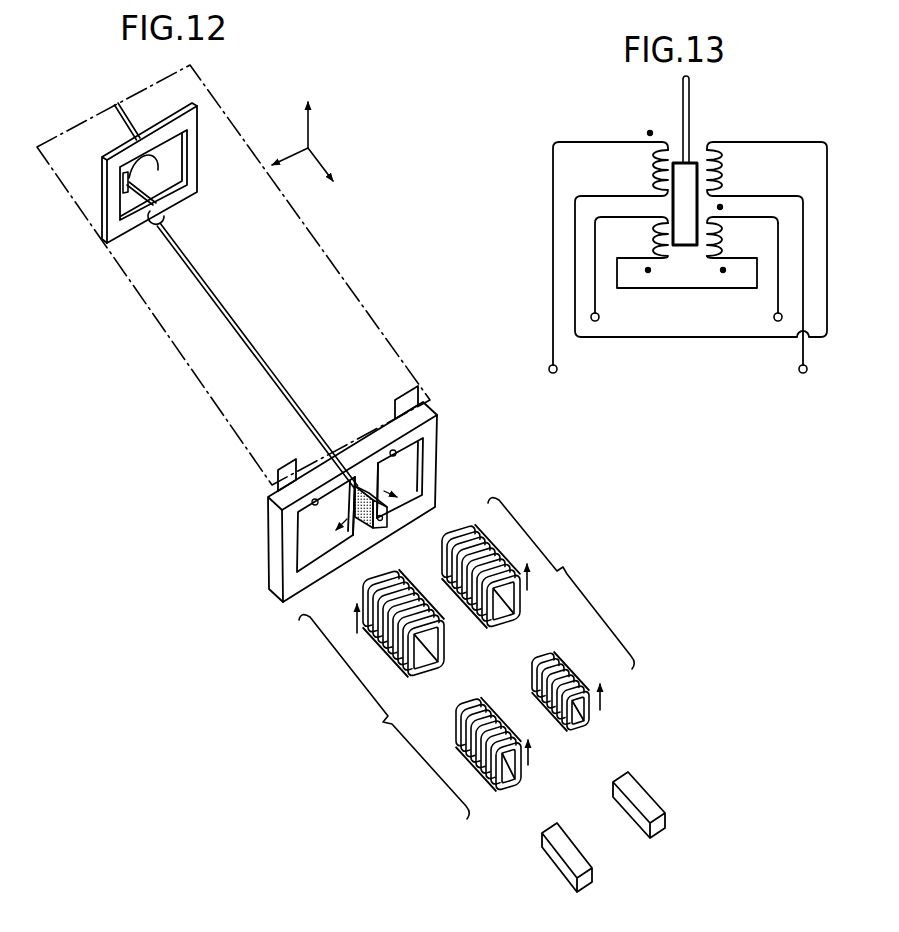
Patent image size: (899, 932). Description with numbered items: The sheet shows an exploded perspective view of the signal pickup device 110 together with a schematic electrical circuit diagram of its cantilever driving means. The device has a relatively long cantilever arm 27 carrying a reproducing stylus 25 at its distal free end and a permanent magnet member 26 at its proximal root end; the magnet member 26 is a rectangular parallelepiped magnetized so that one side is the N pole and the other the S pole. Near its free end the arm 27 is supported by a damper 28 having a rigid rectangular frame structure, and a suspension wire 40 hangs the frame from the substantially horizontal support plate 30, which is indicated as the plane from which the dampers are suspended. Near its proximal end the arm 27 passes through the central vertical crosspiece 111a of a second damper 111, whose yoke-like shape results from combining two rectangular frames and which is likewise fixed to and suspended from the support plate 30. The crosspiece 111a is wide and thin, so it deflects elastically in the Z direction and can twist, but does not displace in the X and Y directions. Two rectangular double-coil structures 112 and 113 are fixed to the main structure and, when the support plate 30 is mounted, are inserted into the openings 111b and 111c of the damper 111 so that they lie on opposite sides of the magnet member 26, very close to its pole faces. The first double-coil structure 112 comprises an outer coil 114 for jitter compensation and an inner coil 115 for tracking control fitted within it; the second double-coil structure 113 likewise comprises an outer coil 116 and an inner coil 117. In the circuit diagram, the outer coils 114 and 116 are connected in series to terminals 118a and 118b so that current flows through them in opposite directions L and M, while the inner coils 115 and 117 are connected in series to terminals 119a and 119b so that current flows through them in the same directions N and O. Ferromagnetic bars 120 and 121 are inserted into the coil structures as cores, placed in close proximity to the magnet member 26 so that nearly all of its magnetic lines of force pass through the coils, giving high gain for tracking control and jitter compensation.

In FIG. 12, the reproducing stylus 25 is at (121, 181).
In FIG. 12, the permanent magnet member 26 is at (379, 523).
In FIG. 13, the permanent magnet member 26 is at (685, 240).
In FIG. 12, the cantilever arm 27 is at (215, 297).
In FIG. 13, the cantilever arm 27 is at (692, 93).
In FIG. 12, the damper 28 is at (198, 163).
In FIG. 12, the support plate 30 is at (186, 366).
In FIG. 12, the suspension wire 40 is at (133, 101).
In FIG. 12, the signal pickup device 110 is at (378, 270).
In FIG. 12, the damper 111 is at (441, 432).
In FIG. 12, the central vertical crosspiece 111a is at (362, 478).
In FIG. 12, the opening 111b is at (314, 498).
In FIG. 12, the opening 111c is at (393, 449).
In FIG. 12, the double-coil structure 112 is at (384, 717).
In FIG. 12, the double-coil structure 113 is at (561, 583).
In FIG. 12, the outer coil 114 is at (397, 668).
In FIG. 13, the outer coil 114 is at (652, 172).
In FIG. 12, the inner coil 115 is at (470, 711).
In FIG. 13, the inner coil 115 is at (653, 233).
In FIG. 12, the outer coil 116 is at (464, 534).
In FIG. 13, the outer coil 116 is at (719, 173).
In FIG. 12, the inner coil 117 is at (563, 657).
In FIG. 13, the inner coil 117 is at (717, 235).
In FIG. 13, the terminal 118a is at (556, 373).
In FIG. 13, the terminal 118b is at (800, 373).
In FIG. 13, the terminal 119a is at (599, 317).
In FIG. 13, the terminal 119b is at (774, 317).
In FIG. 12, the ferromagnetic bar 120 is at (554, 865).
In FIG. 12, the ferromagnetic bar 121 is at (644, 796).